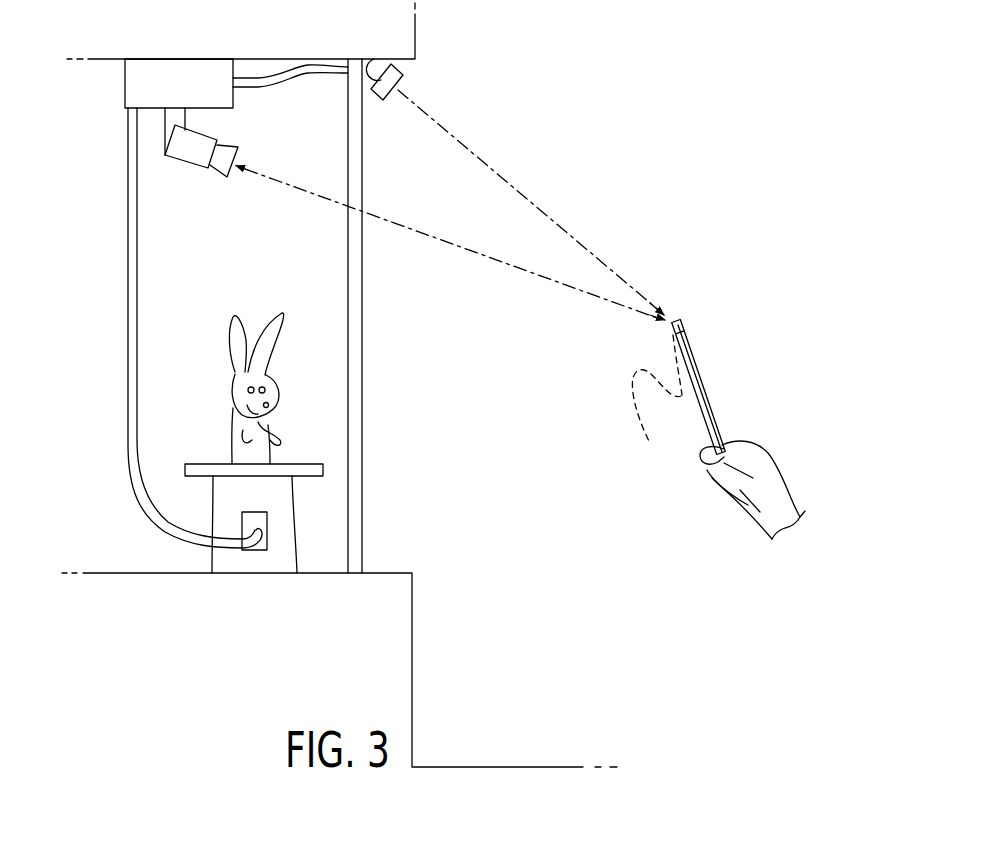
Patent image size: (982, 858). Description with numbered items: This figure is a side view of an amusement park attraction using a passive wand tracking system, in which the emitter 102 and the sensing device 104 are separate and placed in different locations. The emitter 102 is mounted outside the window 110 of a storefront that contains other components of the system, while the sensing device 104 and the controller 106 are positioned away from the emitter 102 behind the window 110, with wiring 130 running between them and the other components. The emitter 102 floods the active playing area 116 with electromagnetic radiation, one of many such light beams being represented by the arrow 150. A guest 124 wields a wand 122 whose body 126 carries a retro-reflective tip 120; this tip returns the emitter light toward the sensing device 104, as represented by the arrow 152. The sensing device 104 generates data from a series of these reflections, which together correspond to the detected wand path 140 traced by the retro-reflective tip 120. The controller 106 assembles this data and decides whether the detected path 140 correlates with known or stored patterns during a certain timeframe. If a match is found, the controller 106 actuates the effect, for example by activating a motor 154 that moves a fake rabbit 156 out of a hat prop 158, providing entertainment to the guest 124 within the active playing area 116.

The emitter 102 is at (403, 78).
The sensing device 104 is at (187, 163).
The controller 106 is at (124, 62).
The window 110 is at (363, 318).
The active playing area 116 is at (510, 730).
The retro-reflective tip 120 is at (681, 323).
The wand 122 is at (693, 425).
The guest 124 is at (753, 520).
The body 126 is at (697, 377).
The cable 130 is at (253, 88).
The detected wand path 140 is at (631, 425).
The arrow 150 is at (463, 143).
The arrow 152 is at (410, 232).
The motor 154 is at (259, 550).
The fake rabbit 156 is at (237, 392).
The hat prop 158 is at (277, 490).